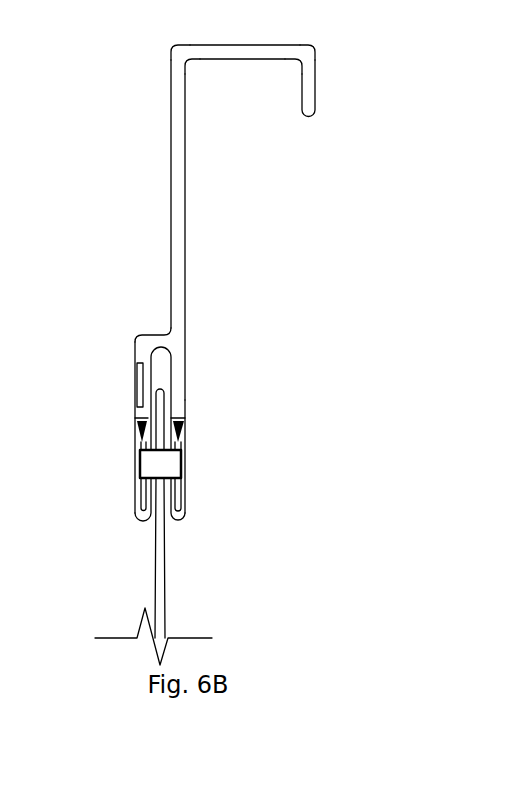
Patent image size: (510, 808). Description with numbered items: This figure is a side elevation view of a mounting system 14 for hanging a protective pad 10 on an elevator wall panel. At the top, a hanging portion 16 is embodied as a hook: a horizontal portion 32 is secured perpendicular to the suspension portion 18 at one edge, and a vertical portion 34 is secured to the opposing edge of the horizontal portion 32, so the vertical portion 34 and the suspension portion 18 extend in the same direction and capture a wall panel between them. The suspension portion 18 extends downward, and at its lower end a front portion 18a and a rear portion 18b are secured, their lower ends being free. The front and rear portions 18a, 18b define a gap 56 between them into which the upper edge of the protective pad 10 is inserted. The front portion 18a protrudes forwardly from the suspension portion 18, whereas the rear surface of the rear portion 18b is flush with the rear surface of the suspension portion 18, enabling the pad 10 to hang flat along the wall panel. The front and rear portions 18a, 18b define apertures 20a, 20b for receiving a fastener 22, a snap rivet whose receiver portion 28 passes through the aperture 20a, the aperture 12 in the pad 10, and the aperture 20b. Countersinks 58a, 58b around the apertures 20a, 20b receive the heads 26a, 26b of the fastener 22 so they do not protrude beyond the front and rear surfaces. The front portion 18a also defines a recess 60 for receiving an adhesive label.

The protective pad 10 is at (157, 587).
The aperture 12 is at (162, 562).
The mounting system 14 is at (268, 271).
The hanging portion 16 is at (353, 72).
The suspension portion 18 is at (177, 194).
The front portion 18a is at (139, 413).
The rear portion 18b is at (182, 397).
The aperture 20a is at (143, 521).
The aperture 20b is at (178, 520).
The fastener 22 is at (95, 470).
The head 26a is at (139, 457).
The head 26b is at (184, 476).
The receiver portion 28 is at (150, 471).
The horizontal portion 32 is at (219, 58).
The vertical portion 34 is at (312, 90).
The gap 56 is at (171, 352).
The countersink 58a is at (137, 423).
The countersink 58b is at (186, 423).
The recess 60 is at (138, 372).